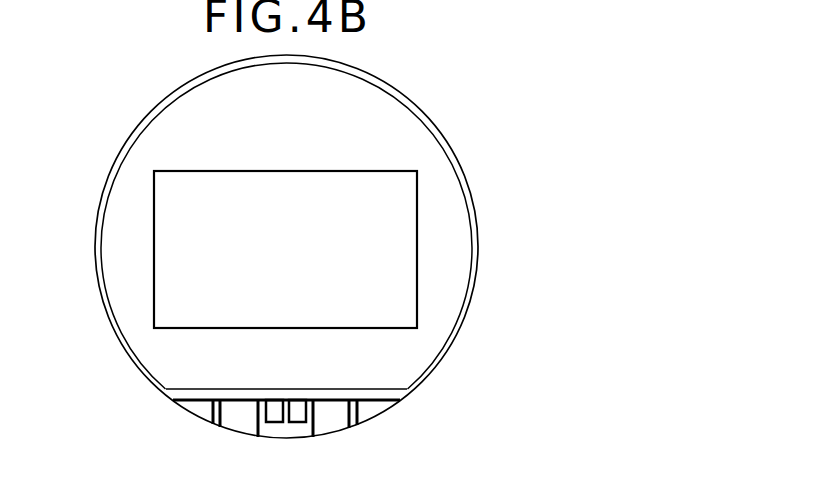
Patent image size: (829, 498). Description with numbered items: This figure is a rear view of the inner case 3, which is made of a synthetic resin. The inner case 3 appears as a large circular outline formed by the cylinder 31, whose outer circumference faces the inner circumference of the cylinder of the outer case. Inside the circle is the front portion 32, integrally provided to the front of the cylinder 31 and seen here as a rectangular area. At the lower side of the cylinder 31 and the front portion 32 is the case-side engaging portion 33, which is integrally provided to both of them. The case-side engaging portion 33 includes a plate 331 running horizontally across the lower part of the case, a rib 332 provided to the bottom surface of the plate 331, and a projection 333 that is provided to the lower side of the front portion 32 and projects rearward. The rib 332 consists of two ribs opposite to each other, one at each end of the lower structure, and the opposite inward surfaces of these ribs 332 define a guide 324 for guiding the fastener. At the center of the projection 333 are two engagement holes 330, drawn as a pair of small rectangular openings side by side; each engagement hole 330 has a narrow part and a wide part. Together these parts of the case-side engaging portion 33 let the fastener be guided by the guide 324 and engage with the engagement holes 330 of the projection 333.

The inner case 3 is at (444, 96).
The cylinder 31 is at (473, 196).
The front portion 32 is at (440, 304).
The case-side engaging portion 33 is at (255, 444).
The guide 324 is at (223, 413).
The engagement holes 330 is at (297, 410).
The plate 331 is at (318, 392).
The rib 332 is at (212, 411).
The projection 333 is at (297, 428).